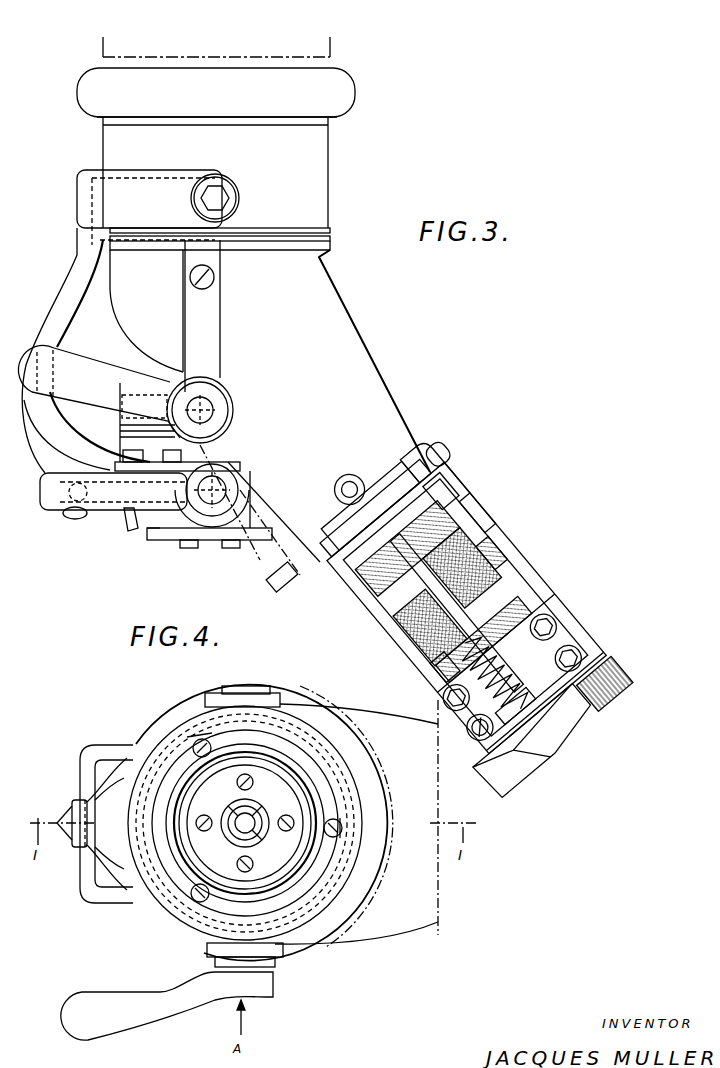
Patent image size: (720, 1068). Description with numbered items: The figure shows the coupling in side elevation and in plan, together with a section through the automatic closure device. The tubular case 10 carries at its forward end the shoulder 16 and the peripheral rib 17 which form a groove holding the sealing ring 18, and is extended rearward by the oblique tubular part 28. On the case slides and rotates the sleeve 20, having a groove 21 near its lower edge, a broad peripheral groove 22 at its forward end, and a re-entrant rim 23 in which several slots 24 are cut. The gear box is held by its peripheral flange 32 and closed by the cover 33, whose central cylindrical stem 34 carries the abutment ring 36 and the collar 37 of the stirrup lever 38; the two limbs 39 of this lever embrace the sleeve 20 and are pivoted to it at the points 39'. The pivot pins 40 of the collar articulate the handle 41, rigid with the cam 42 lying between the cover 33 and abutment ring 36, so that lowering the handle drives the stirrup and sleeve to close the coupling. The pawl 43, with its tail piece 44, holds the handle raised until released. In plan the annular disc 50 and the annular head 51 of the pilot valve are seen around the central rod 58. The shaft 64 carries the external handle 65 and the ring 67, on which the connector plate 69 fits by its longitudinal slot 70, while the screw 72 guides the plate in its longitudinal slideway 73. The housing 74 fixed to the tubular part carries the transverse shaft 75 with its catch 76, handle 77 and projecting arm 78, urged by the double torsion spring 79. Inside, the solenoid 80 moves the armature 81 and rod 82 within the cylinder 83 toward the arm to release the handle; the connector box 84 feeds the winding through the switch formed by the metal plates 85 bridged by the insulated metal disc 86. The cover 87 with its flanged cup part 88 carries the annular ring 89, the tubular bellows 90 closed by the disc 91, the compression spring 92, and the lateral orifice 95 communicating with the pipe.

In FIG. 3, the tubular case 10 is at (113, 314).
In FIG. 4, the shoulder 16 is at (316, 858).
In FIG. 4, the peripheral rib 17 is at (312, 852).
In FIG. 4, the sealing ring 18 is at (310, 845).
In FIG. 3, the sleeve 20 is at (307, 172).
In FIG. 3, the groove 21 is at (332, 236).
In FIG. 3, the peripheral groove 22 is at (338, 83).
In FIG. 4, the peripheral groove 22 is at (370, 750).
In FIG. 4, the re-entrant rim 23 is at (318, 765).
In FIG. 4, the slots 24 is at (187, 740).
In FIG. 3, the oblique tubular part 28 is at (367, 615).
In FIG. 4, the oblique tubular part 28 is at (413, 928).
In FIG. 3, the peripheral flange 32 is at (126, 429).
In FIG. 3, the cover 33 is at (130, 452).
In FIG. 3, the central cylindrical stem 34 is at (185, 529).
In FIG. 3, the abutment ring 36 is at (152, 532).
In FIG. 3, the collar 37 is at (238, 478).
In FIG. 3, the stirrup lever 38 is at (43, 447).
In FIG. 4, the stirrup lever 38 is at (78, 846).
In FIG. 3, the limbs 39 is at (149, 194).
In FIG. 4, the limbs 39 is at (224, 689).
In FIG. 3, the pivot points 39' is at (232, 187).
In FIG. 4, the pivot points 39' is at (200, 812).
In FIG. 3, the pivot pins 40 is at (214, 490).
In FIG. 3, the handle 41 is at (60, 495).
In FIG. 4, the handle 41 is at (90, 884).
In FIG. 3, the cam 42 is at (220, 523).
In FIG. 3, the pawl 43 is at (72, 516).
In FIG. 3, the tail piece 44 is at (132, 522).
In FIG. 4, the annular disc 50 is at (282, 813).
In FIG. 4, the annular head 51 is at (252, 848).
In FIG. 4, the central rod 58 is at (245, 822).
In FIG. 3, the shaft 64 is at (213, 412).
In FIG. 3, the external handle 65 is at (68, 372).
In FIG. 4, the external handle 65 is at (80, 992).
In FIG. 4, the ring 67 is at (280, 963).
In FIG. 3, the connector plate 69 is at (218, 348).
In FIG. 3, the longitudinal slot 70 is at (206, 398).
In FIG. 3, the screw 72 is at (215, 284).
In FIG. 3, the longitudinal slideway 73 is at (200, 262).
In FIG. 3, the housing 74 is at (400, 467).
In FIG. 3, the transverse shaft 75 is at (313, 570).
In FIG. 3, the catch 76 is at (278, 583).
In FIG. 3, the handle 77 is at (437, 457).
In FIG. 3, the projecting arm 78 is at (343, 500).
In FIG. 3, the double torsion spring 79 is at (380, 483).
In FIG. 3, the solenoid 80 is at (487, 573).
In FIG. 3, the armature 81 is at (472, 603).
In FIG. 3, the rod 82 is at (497, 540).
In FIG. 3, the cylinder 83 is at (510, 598).
In FIG. 3, the connector box 84 is at (480, 520).
In FIG. 3, the metal plates 85 is at (463, 483).
In FIG. 3, the insulated metal disc 86 is at (345, 540).
In FIG. 3, the cover 87 is at (548, 608).
In FIG. 3, the flanged cup part 88 is at (570, 653).
In FIG. 3, the annular ring 89 is at (447, 663).
In FIG. 3, the tubular bellows 90 is at (475, 716).
In FIG. 3, the disc 91 is at (525, 725).
In FIG. 3, the compression spring 92 is at (477, 741).
In FIG. 3, the lateral orifice 95 is at (568, 705).